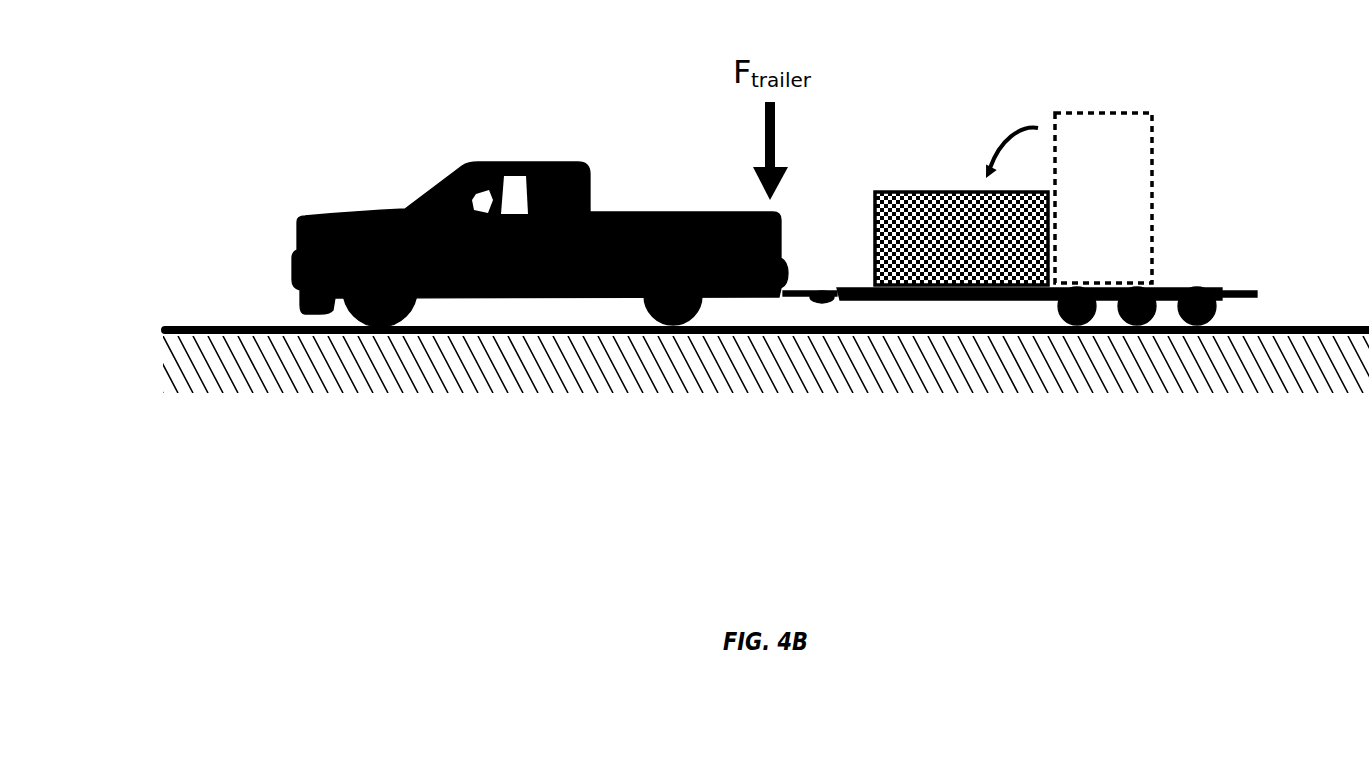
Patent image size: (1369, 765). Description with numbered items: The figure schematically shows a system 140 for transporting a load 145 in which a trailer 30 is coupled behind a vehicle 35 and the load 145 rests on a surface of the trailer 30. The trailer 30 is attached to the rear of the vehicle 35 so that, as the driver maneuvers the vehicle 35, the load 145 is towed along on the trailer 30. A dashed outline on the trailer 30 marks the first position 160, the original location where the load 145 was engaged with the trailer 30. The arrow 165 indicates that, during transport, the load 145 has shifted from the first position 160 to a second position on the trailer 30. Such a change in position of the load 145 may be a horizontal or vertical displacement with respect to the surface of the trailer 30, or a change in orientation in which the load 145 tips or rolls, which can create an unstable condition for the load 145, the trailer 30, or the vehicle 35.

The system 140 is at (152, 215).
The vehicle 35 is at (357, 210).
The trailer 30 is at (1222, 283).
The load 145 is at (918, 191).
The first position 160 is at (1123, 211).
The arrow 165 is at (1015, 125).